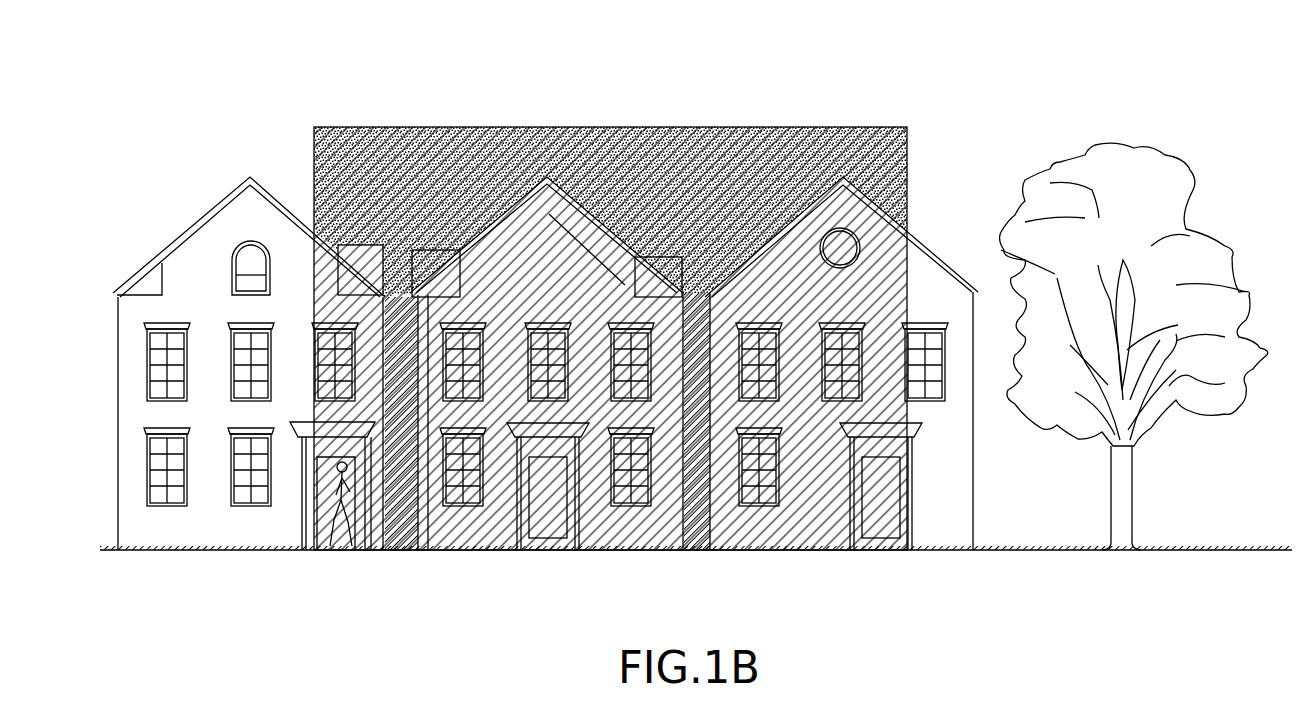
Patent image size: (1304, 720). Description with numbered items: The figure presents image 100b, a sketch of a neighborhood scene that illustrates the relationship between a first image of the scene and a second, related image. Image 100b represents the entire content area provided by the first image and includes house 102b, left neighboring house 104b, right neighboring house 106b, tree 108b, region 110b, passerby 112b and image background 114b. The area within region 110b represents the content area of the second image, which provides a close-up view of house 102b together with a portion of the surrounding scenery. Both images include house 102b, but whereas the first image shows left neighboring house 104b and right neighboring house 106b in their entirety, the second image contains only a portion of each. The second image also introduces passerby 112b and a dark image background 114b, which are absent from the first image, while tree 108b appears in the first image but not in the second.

The image 100b is at (1203, 62).
The house 102b is at (600, 198).
The left neighboring house 104b is at (282, 197).
The right neighboring house 106b is at (907, 211).
The tree 108b is at (1085, 163).
The region 110b is at (827, 128).
The passerby 112b is at (332, 552).
The image background 114b is at (493, 128).